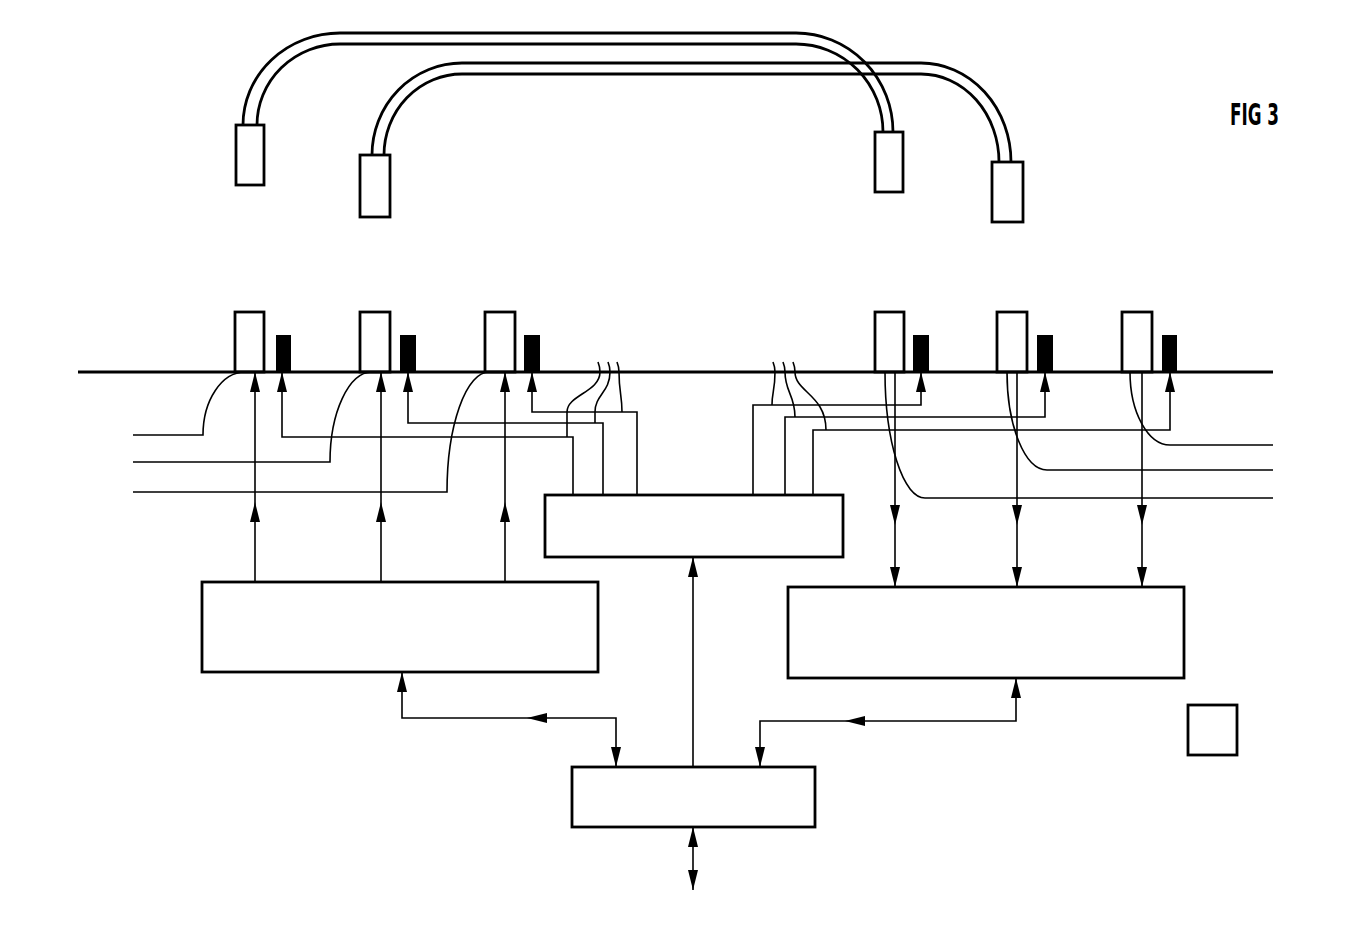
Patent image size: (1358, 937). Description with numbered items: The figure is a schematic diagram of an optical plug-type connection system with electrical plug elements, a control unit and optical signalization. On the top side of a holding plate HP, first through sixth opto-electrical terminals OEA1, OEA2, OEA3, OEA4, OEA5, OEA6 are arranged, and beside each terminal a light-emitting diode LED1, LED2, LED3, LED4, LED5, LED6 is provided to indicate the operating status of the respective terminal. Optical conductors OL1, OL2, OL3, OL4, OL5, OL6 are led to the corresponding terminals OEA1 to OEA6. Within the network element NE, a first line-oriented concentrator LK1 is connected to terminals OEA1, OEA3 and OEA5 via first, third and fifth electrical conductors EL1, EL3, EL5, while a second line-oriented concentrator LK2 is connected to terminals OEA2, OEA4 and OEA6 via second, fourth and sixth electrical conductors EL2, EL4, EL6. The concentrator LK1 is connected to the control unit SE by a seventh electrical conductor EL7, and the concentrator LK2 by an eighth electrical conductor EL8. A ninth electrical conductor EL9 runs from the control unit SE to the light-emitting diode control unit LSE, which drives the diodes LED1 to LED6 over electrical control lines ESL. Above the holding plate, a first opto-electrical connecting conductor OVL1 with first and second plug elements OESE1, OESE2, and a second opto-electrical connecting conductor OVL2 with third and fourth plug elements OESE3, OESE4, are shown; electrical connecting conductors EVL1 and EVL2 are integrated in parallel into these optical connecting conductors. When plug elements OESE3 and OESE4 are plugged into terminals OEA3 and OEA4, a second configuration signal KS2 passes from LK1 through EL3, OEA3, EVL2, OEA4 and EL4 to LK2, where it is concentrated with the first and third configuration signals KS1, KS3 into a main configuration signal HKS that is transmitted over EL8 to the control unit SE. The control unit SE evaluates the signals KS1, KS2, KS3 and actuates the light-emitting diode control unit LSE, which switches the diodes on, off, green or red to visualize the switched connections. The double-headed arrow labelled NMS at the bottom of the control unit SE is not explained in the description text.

The first opto-electrical plug element OESE1 is at (234, 152).
The second opto-electrical plug element OESE2 is at (873, 158).
The third opto-electrical plug element OESE3 is at (392, 187).
The fourth opto-electrical plug element OESE4 is at (1025, 192).
The first opto-electrical connecting conductor OVL1 is at (262, 64).
The second opto-electrical connecting conductor OVL2 is at (392, 102).
The first electrical connecting conductor EVL1 is at (872, 84).
The second electrical connecting conductor EVL2 is at (970, 108).
The holding plate HP is at (694, 379).
The first opto-electrical terminal OEA1 is at (234, 318).
The second opto-electrical terminal OEA2 is at (878, 311).
The third opto-electrical terminal OEA3 is at (370, 311).
The fourth opto-electrical terminal OEA4 is at (1007, 311).
The fifth opto-electrical terminal OEA5 is at (500, 311).
The sixth opto-electrical terminal OEA6 is at (1130, 311).
The first light-emitting diode LED1 is at (283, 334).
The second light-emitting diode LED2 is at (922, 334).
The third light-emitting diode LED3 is at (408, 334).
The fourth light-emitting diode LED4 is at (1046, 334).
The fifth light-emitting diode LED5 is at (532, 334).
The sixth light-emitting diode LED6 is at (1170, 334).
The electrical control lines ESL is at (696, 380).
The first optical conductor OL1 is at (162, 410).
The second optical conductor OL2 is at (1105, 448).
The third optical conductor OL3 is at (226, 425).
The fourth optical conductor OL4 is at (1166, 432).
The fifth optical conductor OL5 is at (284, 443).
The sixth optical conductor OL6 is at (1227, 417).
The first configuration signal KS1 is at (252, 512).
The second configuration signal KS2 is at (378, 512).
The third configuration signal KS3 is at (502, 512).
The first electrical conductor EL1 is at (253, 556).
The second electrical conductor EL2 is at (898, 557).
The third electrical conductor EL3 is at (379, 556).
The fourth electrical conductor EL4 is at (1020, 557).
The fifth electrical conductor EL5 is at (503, 556).
The sixth electrical conductor EL6 is at (1145, 557).
The seventh electrical conductor EL7 is at (455, 720).
The eighth electrical conductor EL8 is at (953, 723).
The ninth electrical conductor EL9 is at (693, 688).
The main configuration signal HKS is at (540, 721).
The first line-oriented concentrator LK1 is at (400, 627).
The second line-oriented concentrator LK2 is at (986, 632).
The light-emitting diode control unit LSE is at (694, 526).
The control unit SE is at (693, 797).
The network element NE is at (1212, 730).
The network management system NMS is at (662, 861).